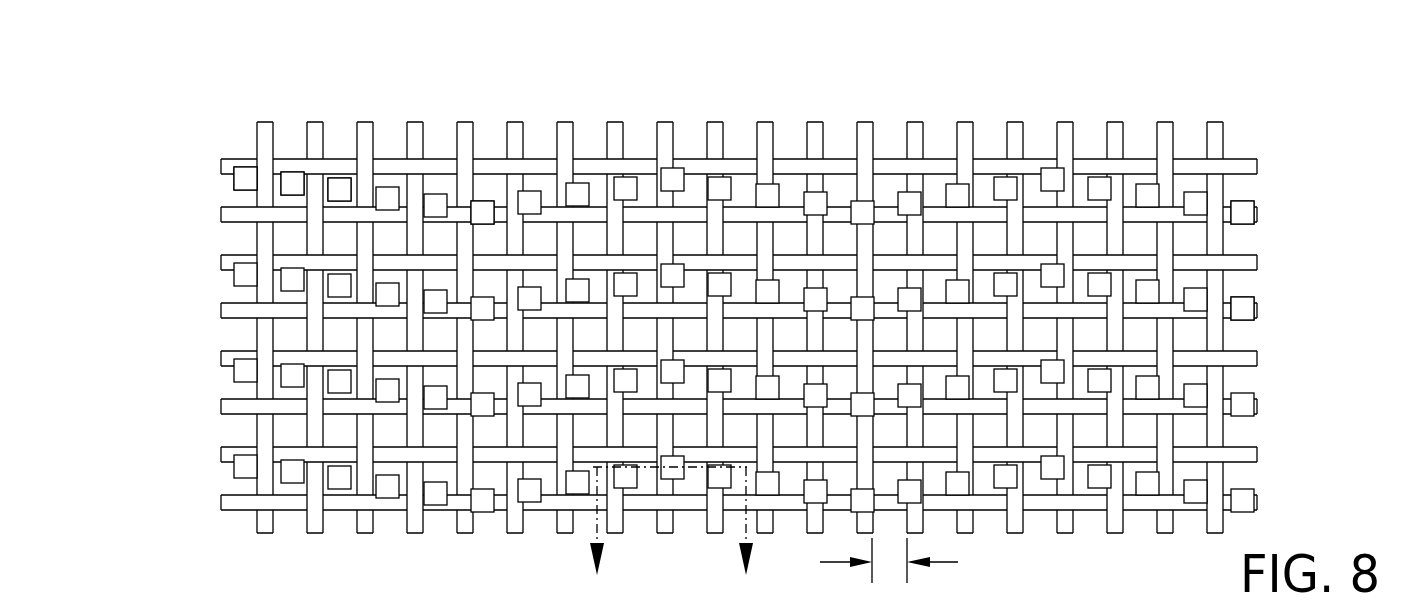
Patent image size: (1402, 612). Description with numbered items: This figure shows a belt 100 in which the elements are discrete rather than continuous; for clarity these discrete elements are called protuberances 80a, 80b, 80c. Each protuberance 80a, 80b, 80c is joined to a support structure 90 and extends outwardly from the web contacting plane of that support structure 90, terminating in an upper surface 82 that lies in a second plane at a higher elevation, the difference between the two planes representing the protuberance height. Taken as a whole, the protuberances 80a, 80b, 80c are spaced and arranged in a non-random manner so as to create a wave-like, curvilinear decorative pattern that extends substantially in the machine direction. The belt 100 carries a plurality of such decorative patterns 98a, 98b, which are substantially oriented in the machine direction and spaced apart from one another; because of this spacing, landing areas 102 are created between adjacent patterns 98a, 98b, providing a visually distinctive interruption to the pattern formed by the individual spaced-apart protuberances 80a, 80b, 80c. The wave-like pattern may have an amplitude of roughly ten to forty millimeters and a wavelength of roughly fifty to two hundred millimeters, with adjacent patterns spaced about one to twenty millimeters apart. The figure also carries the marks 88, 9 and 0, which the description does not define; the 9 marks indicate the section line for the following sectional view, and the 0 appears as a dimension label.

The belt 100 is at (701, 328).
The support structure 90 is at (191, 240).
The upper surface 82 is at (646, 167).
The landing areas 102 is at (490, 273).
The protuberance 80a is at (247, 180).
The protuberance 80b is at (293, 185).
The protuberance 80c is at (342, 193).
The electronic element 88 is at (482, 178).
The decorative pattern 98a is at (1288, 216).
The decorative pattern 98b is at (1293, 316).
The section line of FIG. 9 is at (672, 539).
The zero spacing dimension 0 is at (905, 560).